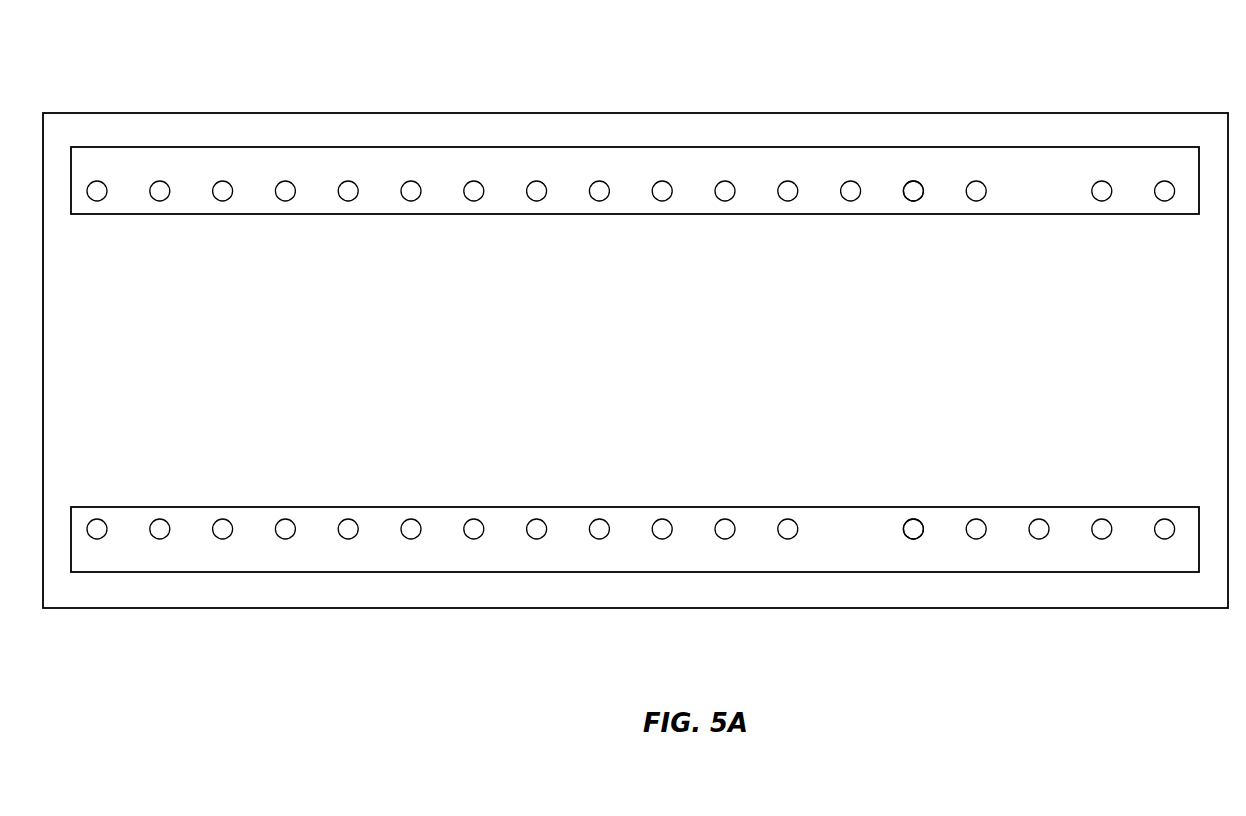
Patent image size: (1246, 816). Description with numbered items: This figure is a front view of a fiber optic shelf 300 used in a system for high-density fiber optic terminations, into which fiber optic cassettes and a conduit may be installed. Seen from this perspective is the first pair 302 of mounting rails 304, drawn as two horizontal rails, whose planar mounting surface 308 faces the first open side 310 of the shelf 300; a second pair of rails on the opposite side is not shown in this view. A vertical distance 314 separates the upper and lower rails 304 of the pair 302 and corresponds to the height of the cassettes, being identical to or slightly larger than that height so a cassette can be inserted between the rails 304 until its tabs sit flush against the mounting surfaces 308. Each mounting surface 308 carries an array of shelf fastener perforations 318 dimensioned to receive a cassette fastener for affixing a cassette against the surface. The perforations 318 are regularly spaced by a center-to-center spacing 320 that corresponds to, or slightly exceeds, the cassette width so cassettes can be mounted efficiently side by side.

The fiber optic shelf 300 is at (434, 72).
The first pair of mounting rails 302 is at (130, 202).
The mounting rail 304 is at (261, 200).
The planar mounting surface 308 is at (932, 200).
The first open side 310 is at (1115, 364).
The vertical distance 314 is at (497, 216).
The shelf fastener perforation 318 is at (848, 188).
The center-to-center spacing 320 is at (468, 191).